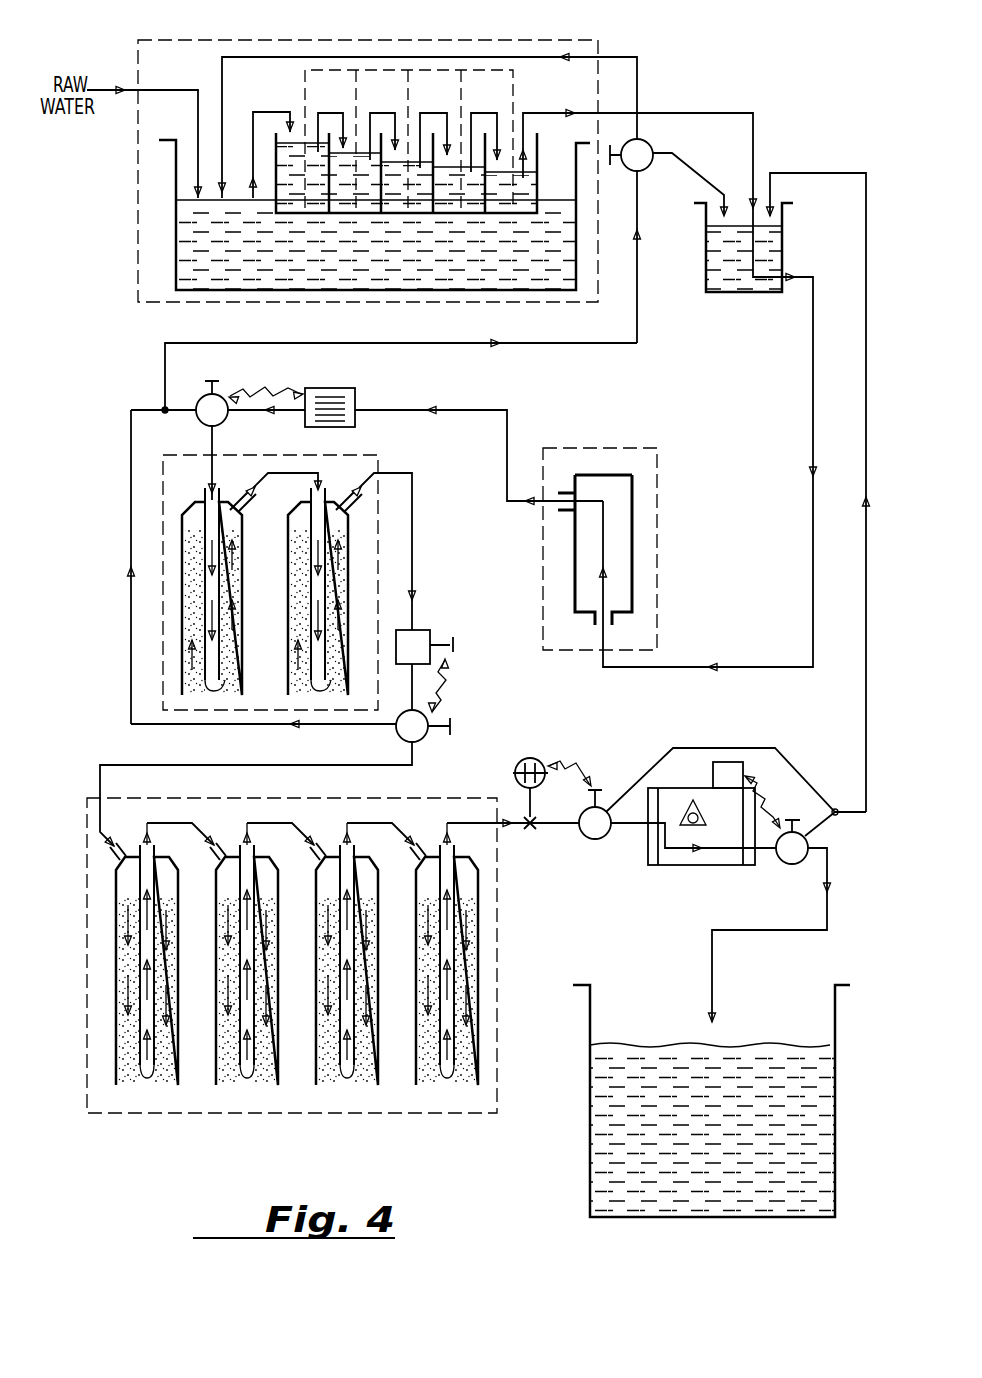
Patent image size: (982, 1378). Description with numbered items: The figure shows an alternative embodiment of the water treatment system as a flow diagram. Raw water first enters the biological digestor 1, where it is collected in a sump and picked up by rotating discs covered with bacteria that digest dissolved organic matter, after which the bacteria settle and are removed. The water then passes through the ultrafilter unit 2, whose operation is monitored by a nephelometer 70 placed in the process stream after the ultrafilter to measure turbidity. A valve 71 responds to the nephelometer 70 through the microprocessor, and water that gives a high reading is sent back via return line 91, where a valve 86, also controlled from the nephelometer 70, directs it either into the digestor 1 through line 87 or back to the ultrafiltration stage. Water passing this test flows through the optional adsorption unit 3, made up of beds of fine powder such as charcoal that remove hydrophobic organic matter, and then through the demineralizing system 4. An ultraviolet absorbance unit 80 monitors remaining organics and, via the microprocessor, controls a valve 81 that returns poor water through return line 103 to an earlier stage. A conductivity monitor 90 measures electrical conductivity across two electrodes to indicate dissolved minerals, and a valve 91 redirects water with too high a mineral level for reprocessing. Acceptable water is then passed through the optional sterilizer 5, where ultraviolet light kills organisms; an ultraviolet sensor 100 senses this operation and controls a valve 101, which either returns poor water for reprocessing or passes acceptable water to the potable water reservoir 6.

The biological digestor 1 is at (448, 34).
The ultrafilter unit 2 is at (681, 438).
The adsorption unit 3 is at (332, 455).
The demineralizing system 4 is at (420, 1116).
The sterilizer 5 is at (728, 860).
The reservoir 6 is at (633, 1145).
The nephelometer 70 is at (357, 396).
The valve 71 is at (198, 399).
The ultraviolet absorbance unit 80 is at (431, 632).
The valve 81 is at (423, 738).
The valve 86 is at (645, 165).
The line 87 is at (697, 166).
The conductivity monitor 90 is at (519, 760).
The valve 91 is at (420, 343).
The ultraviolet sensor 100 is at (713, 775).
The valve 101 is at (788, 866).
The return line 103 is at (130, 535).